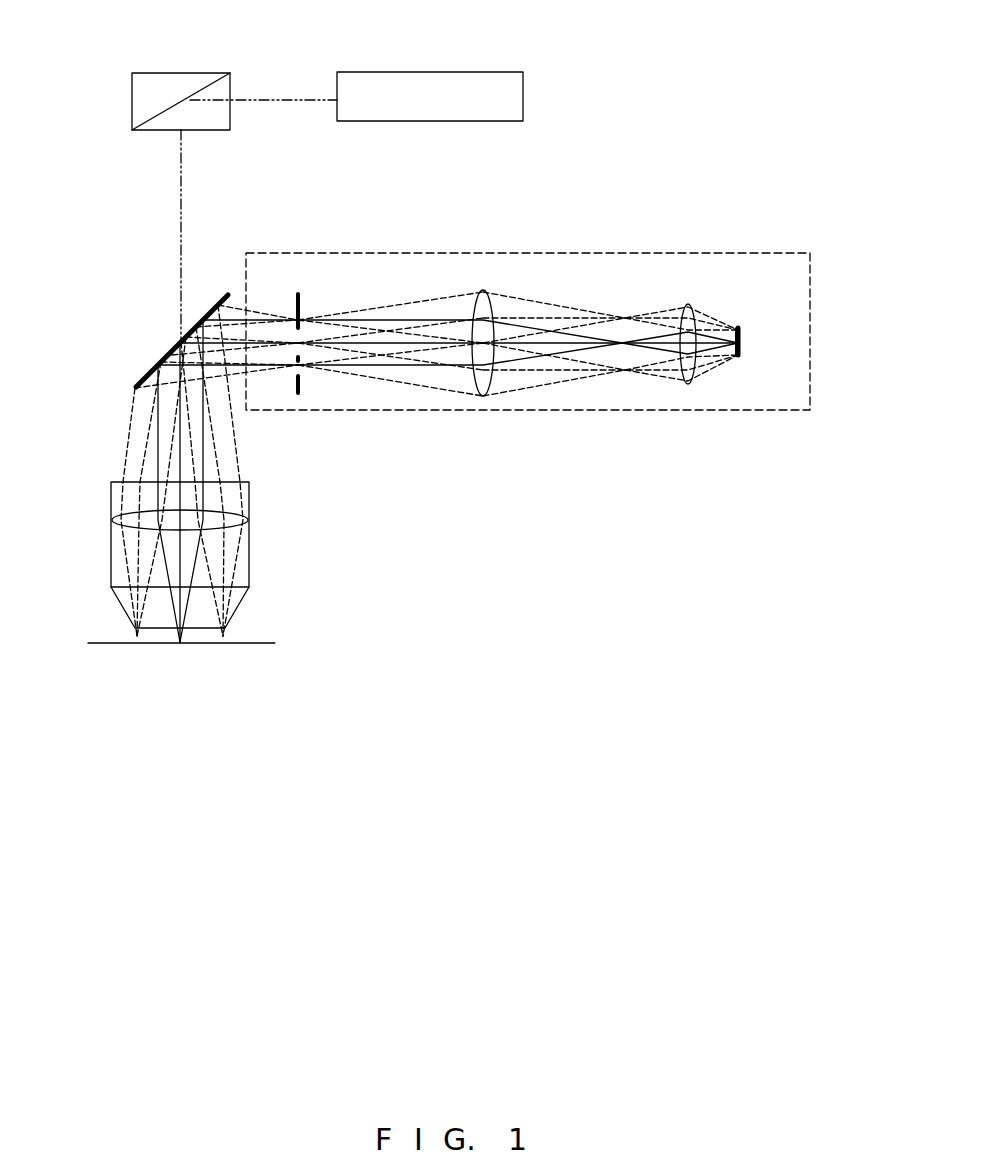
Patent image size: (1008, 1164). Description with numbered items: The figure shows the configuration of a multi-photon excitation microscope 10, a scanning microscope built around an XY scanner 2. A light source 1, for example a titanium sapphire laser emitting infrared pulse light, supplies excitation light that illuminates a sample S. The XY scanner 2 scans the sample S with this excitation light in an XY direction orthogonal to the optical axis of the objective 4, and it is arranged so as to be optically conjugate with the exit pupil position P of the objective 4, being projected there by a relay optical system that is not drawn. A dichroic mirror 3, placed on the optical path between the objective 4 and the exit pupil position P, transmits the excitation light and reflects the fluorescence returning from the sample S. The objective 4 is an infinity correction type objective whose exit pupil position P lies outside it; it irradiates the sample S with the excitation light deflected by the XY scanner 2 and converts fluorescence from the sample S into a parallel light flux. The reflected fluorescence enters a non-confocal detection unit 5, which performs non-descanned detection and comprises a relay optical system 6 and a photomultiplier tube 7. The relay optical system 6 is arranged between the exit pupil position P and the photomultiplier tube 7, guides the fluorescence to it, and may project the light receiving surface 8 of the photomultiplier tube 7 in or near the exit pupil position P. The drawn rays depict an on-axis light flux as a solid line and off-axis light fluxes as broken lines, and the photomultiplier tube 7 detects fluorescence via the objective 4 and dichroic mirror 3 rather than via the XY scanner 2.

The light source 1 is at (360, 72).
The XY scanner 2 is at (158, 72).
The dichroic mirror 3 is at (162, 358).
The objective 4 is at (111, 546).
The non-confocal detection unit 5 is at (422, 253).
The relay optical system 6 is at (693, 390).
The photomultiplier tube 7 is at (740, 338).
The light receiving surface 8 is at (736, 326).
The multi-photon excitation microscope 10 is at (740, 80).
The exit pupil position P is at (297, 293).
The sample S is at (256, 643).